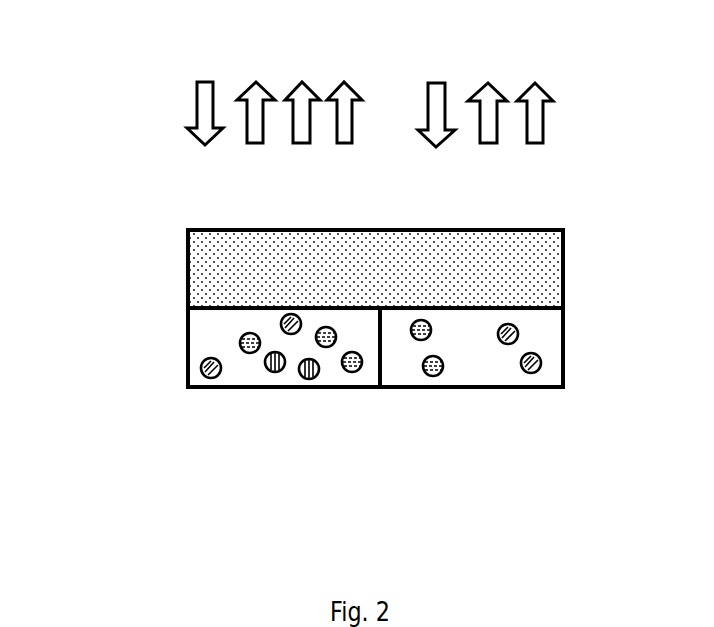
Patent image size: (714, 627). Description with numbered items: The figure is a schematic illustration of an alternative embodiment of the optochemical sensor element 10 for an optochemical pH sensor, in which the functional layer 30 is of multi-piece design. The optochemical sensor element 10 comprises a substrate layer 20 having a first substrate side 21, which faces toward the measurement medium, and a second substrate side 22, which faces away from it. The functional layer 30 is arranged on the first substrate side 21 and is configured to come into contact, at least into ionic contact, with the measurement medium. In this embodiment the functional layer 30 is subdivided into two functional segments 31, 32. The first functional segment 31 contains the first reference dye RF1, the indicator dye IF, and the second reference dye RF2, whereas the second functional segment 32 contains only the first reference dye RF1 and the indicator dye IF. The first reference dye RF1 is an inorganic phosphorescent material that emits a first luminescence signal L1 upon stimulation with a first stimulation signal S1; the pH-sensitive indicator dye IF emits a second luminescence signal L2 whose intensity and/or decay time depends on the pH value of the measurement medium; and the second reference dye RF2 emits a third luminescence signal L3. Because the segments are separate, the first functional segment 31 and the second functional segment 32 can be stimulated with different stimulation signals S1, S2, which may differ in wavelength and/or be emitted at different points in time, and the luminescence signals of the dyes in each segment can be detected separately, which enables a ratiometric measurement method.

The optochemical sensor element 10 is at (342, 356).
The substrate layer 20 is at (375, 248).
The second substrate side 22 is at (542, 223).
The first substrate side 21 is at (543, 315).
The functional layer 30 is at (374, 371).
The first functional segment 31 is at (336, 371).
The second functional segment 32 is at (482, 331).
The first reference dye RF1 is at (211, 378).
The second reference dye RF2 is at (275, 372).
The indicator dye IF is at (250, 353).
The first stimulation signal S1 is at (205, 94).
The second stimulation signal S2 is at (436, 95).
The first luminescence signal L1 is at (372, 93).
The second luminescence signal L2 is at (302, 93).
The third luminescence signal L3 is at (440, 93).